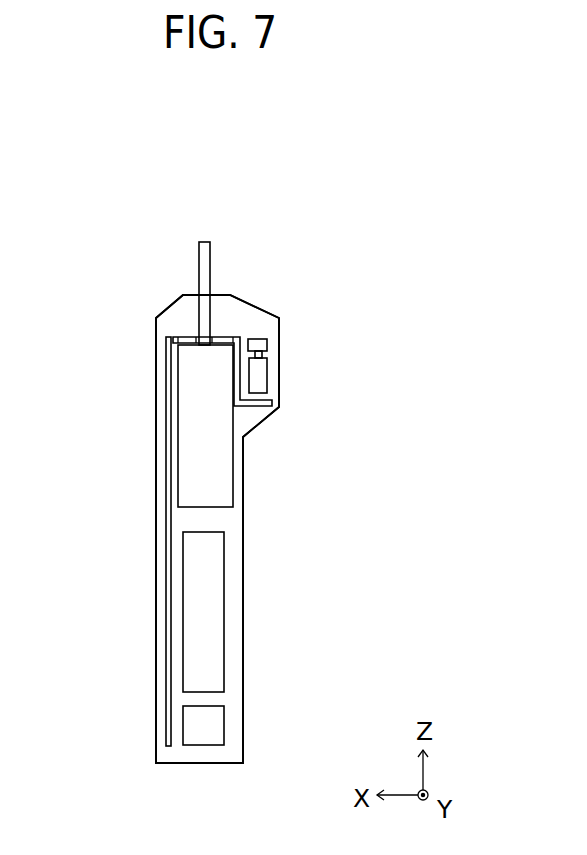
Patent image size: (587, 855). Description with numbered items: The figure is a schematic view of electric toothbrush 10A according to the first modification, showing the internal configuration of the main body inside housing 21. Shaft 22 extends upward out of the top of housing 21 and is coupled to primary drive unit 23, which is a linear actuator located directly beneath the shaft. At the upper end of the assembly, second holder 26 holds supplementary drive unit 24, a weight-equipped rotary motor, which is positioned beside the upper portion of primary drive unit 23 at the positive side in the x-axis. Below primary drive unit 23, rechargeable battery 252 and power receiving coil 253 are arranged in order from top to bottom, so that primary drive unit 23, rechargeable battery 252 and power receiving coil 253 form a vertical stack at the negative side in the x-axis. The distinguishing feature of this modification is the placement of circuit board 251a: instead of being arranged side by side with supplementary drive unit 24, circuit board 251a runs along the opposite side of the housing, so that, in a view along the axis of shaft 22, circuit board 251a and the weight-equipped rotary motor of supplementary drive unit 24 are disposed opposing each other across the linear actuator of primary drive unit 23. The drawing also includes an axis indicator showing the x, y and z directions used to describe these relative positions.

The electric toothbrush 10A is at (378, 226).
The housing 21 is at (243, 570).
The shaft 22 is at (205, 272).
The primary drive unit 23 is at (225, 472).
The supplementary drive unit 24 is at (262, 380).
The second holder 26 is at (240, 337).
The circuit board 251a is at (170, 610).
The rechargeable battery 252 is at (213, 655).
The power receiving coil 253 is at (213, 727).